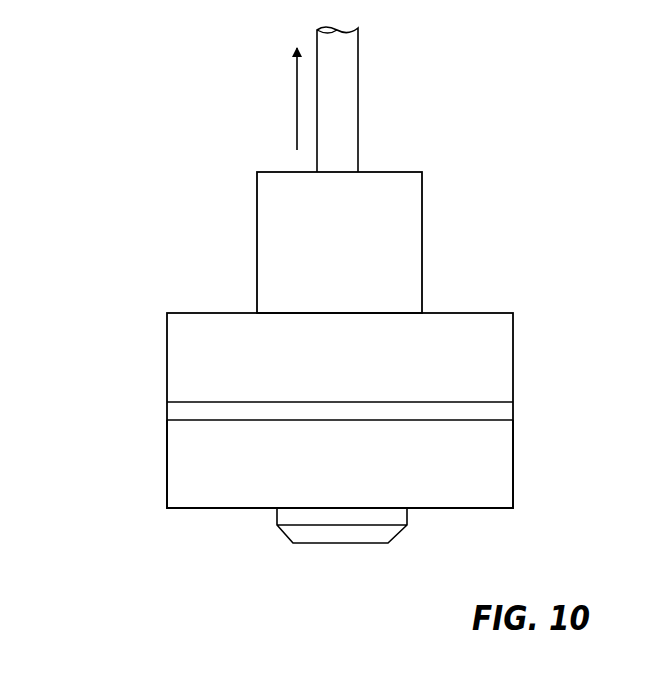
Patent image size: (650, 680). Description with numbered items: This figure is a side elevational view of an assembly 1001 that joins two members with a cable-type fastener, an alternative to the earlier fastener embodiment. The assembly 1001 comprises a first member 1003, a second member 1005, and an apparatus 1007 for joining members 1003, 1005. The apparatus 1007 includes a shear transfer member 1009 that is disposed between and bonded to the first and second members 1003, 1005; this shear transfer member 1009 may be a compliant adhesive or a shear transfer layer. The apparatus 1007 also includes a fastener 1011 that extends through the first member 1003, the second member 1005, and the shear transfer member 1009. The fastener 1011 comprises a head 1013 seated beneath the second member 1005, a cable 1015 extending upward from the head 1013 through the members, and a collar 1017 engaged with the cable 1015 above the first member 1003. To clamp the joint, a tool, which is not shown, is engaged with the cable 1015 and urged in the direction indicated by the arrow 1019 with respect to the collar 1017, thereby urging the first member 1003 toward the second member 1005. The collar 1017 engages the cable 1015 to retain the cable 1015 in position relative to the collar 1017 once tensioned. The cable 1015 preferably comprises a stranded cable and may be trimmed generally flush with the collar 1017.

The assembly 1001 is at (494, 103).
The first member 1003 is at (173, 358).
The second member 1005 is at (180, 463).
The apparatus for joining members 1007 is at (247, 158).
The shear transfer member 1009 is at (175, 410).
The fastener 1011 is at (280, 536).
The head 1013 is at (377, 537).
The cable 1015 is at (340, 95).
The collar 1017 is at (410, 248).
The arrow 1019 is at (293, 88).